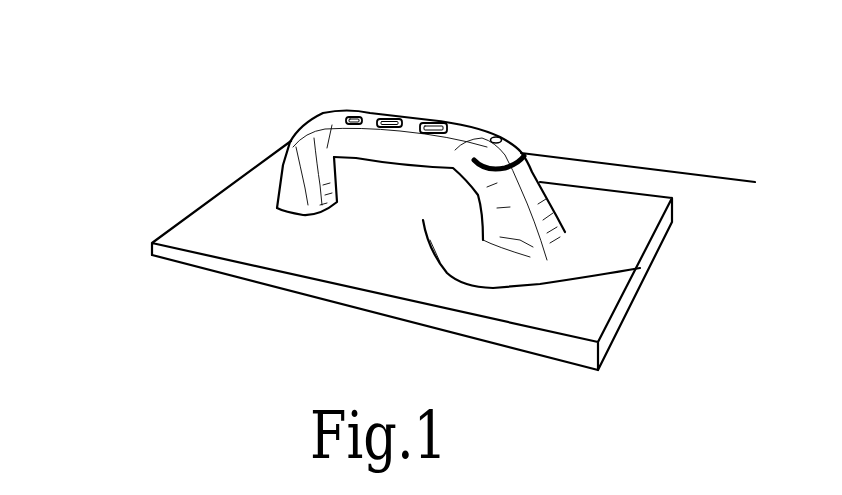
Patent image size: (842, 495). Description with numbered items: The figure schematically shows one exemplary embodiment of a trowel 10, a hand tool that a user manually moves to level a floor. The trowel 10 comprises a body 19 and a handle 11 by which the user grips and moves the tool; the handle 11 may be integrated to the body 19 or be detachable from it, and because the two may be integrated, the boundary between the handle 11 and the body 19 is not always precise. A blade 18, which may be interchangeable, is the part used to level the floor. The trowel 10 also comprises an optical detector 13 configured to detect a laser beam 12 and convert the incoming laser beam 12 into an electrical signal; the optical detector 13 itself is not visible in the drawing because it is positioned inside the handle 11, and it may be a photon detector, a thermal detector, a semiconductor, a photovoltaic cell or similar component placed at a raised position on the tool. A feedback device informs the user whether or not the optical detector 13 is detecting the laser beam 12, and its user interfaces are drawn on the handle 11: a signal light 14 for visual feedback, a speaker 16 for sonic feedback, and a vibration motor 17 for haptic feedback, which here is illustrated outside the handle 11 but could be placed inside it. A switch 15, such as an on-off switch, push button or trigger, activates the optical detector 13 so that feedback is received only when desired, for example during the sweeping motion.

The trowel 10 is at (409, 194).
The handle 11 is at (290, 195).
The laser beam 12 is at (677, 173).
The optical detector 13 is at (517, 137).
The signal light 14 is at (497, 135).
The switch 15 is at (435, 122).
The speaker 16 is at (387, 119).
The vibration motor 17 is at (350, 123).
The blade 18 is at (262, 286).
The body 19 is at (640, 268).